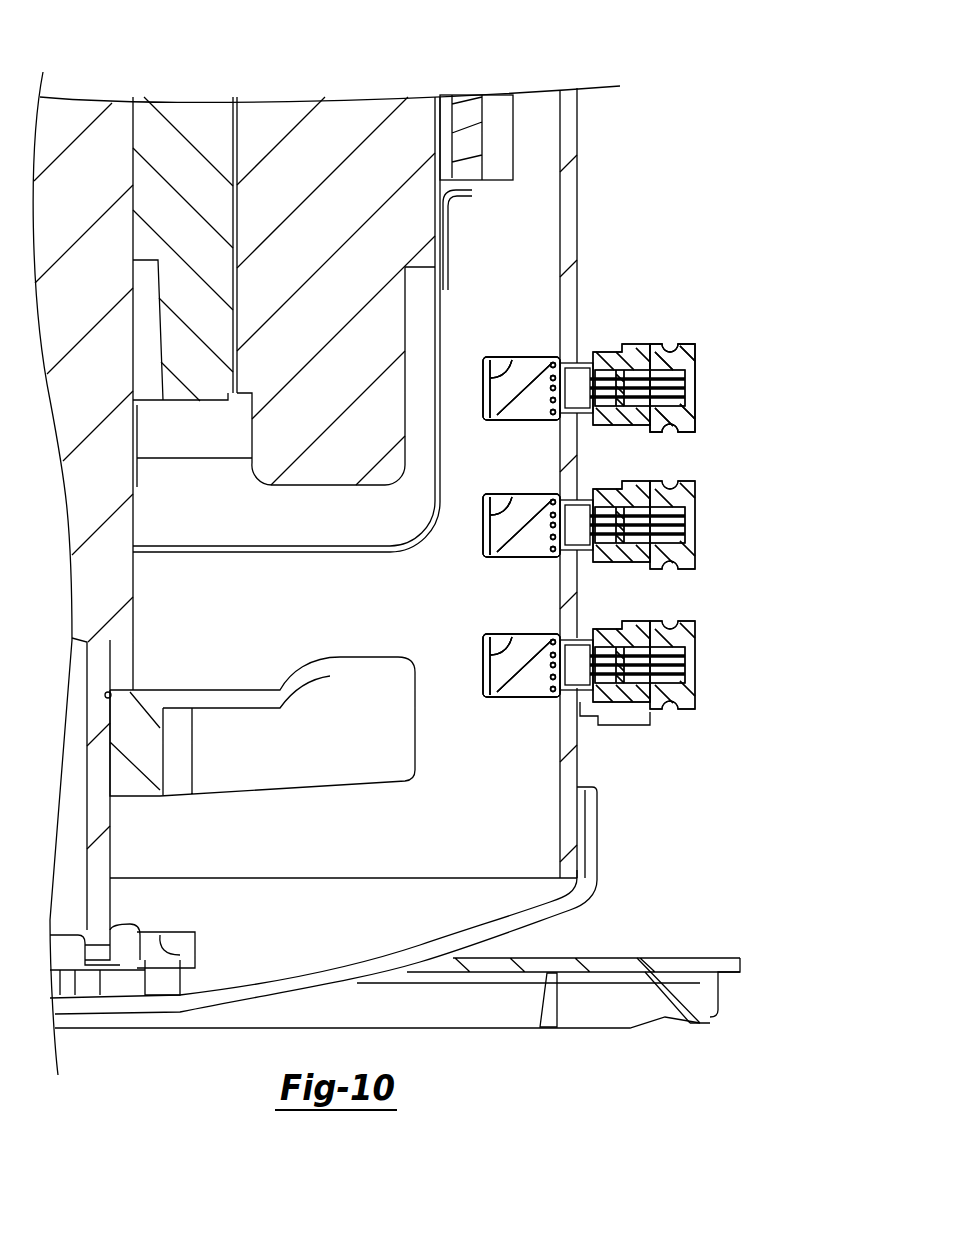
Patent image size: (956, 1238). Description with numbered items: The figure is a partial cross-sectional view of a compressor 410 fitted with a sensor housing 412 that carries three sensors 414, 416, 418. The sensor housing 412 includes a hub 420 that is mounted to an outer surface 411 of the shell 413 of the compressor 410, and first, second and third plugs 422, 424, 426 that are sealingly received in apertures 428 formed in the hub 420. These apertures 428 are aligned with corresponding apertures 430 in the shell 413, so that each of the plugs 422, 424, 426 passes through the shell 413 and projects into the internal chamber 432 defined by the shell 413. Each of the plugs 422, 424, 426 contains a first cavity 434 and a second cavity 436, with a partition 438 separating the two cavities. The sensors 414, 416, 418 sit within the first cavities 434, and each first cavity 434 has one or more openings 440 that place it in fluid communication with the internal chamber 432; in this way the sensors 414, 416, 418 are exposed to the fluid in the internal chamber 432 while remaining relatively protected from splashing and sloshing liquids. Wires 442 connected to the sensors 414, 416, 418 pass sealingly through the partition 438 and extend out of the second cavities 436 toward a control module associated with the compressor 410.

The compressor 410 is at (545, 72).
The outer surface 411 is at (578, 175).
The sensor housing 412 is at (672, 328).
The shell 413 is at (585, 230).
The sensor 414 is at (530, 698).
The sensor 416 is at (515, 560).
The sensor 418 is at (512, 425).
The hub 420 is at (618, 712).
The first plug 422 is at (681, 668).
The second plug 424 is at (681, 528).
The third plug 426 is at (690, 420).
The apertures 428 is at (690, 343).
The apertures 430 is at (568, 352).
The internal chamber 432 is at (545, 128).
The first cavity 434 is at (500, 378).
The second cavity 436 is at (688, 379).
The partition 438 is at (625, 340).
The openings 440 is at (483, 398).
The wires 442 is at (688, 397).